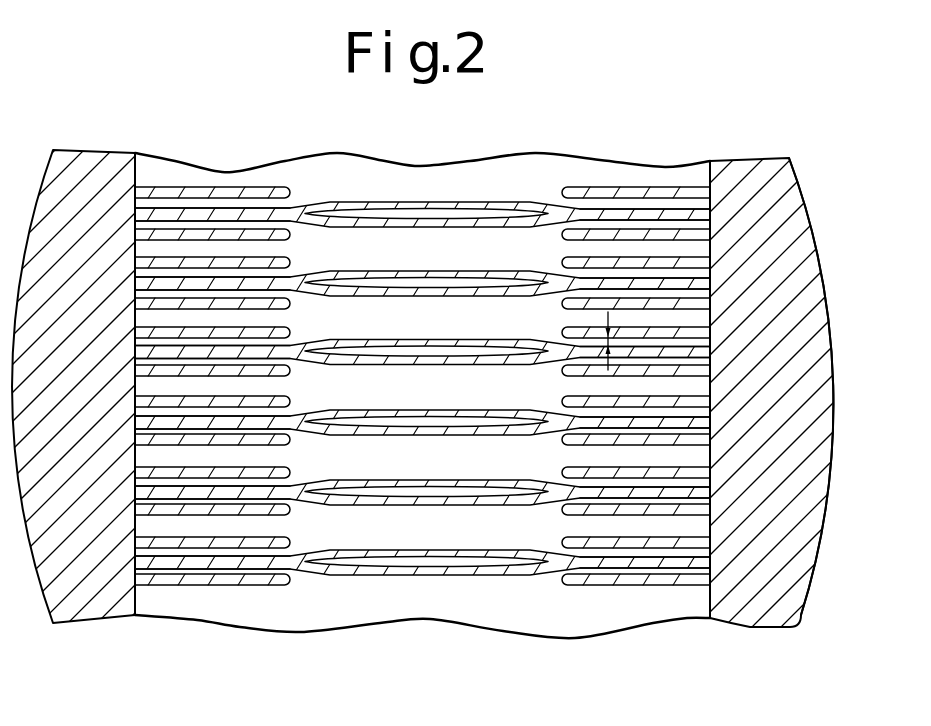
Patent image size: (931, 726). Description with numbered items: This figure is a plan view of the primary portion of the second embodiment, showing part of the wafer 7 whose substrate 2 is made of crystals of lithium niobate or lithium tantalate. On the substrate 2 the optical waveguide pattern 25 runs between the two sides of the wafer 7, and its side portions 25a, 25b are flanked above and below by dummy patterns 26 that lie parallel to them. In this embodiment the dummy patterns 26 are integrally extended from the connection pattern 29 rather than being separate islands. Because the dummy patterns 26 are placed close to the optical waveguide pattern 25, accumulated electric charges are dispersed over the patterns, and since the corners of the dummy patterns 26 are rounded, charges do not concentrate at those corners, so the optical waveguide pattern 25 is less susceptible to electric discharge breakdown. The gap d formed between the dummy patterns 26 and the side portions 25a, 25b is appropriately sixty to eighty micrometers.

The substrate 2 is at (380, 616).
The wafer 7 is at (800, 165).
The optical waveguide pattern 25 is at (422, 413).
The side portion 25a is at (240, 562).
The side portion 25b is at (655, 565).
The dummy pattern 26 is at (203, 542).
The connection pattern 29 is at (90, 603).
The gap d is at (606, 341).